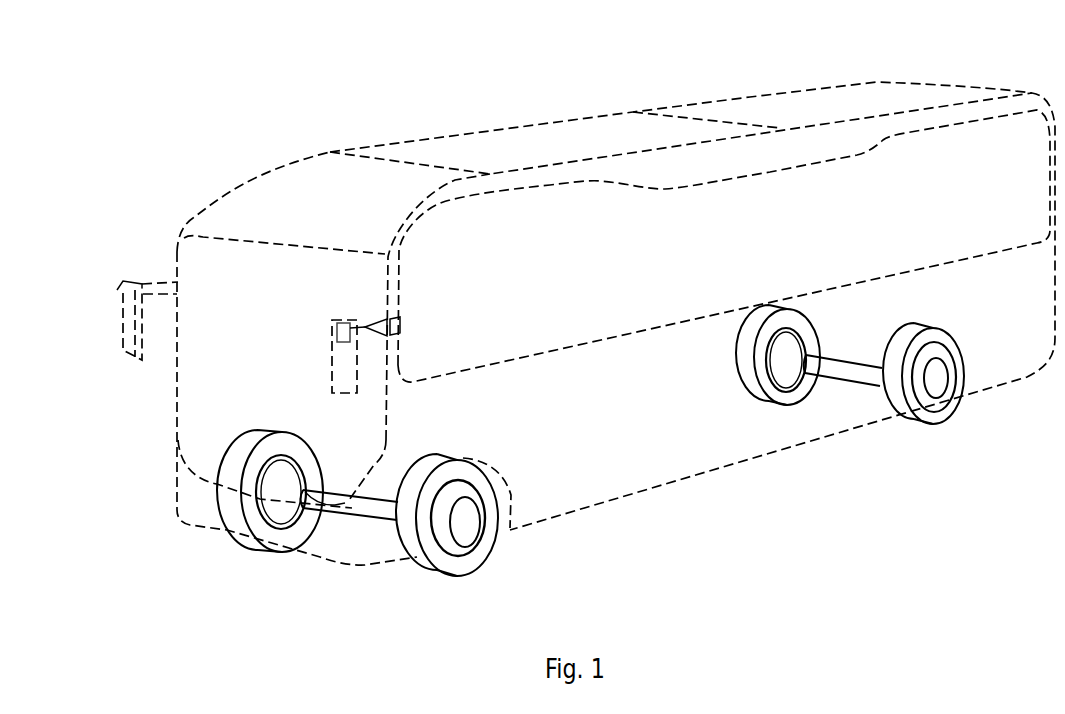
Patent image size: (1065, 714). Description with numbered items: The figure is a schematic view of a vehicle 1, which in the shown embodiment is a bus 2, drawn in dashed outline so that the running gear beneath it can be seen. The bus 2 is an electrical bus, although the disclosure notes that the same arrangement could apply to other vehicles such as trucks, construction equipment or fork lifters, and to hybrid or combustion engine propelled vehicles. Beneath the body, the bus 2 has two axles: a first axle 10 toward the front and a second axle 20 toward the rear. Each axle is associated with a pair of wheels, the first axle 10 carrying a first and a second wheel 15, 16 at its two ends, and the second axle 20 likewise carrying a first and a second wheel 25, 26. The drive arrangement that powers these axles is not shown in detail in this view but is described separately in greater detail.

The vehicle 1 is at (190, 145).
The bus 2 is at (586, 323).
The first axle 10 is at (360, 510).
The first wheel 15 is at (237, 458).
The second wheel 16 is at (415, 483).
The second axle 20 is at (843, 370).
The first wheel 25 is at (755, 328).
The second wheel 26 is at (907, 340).